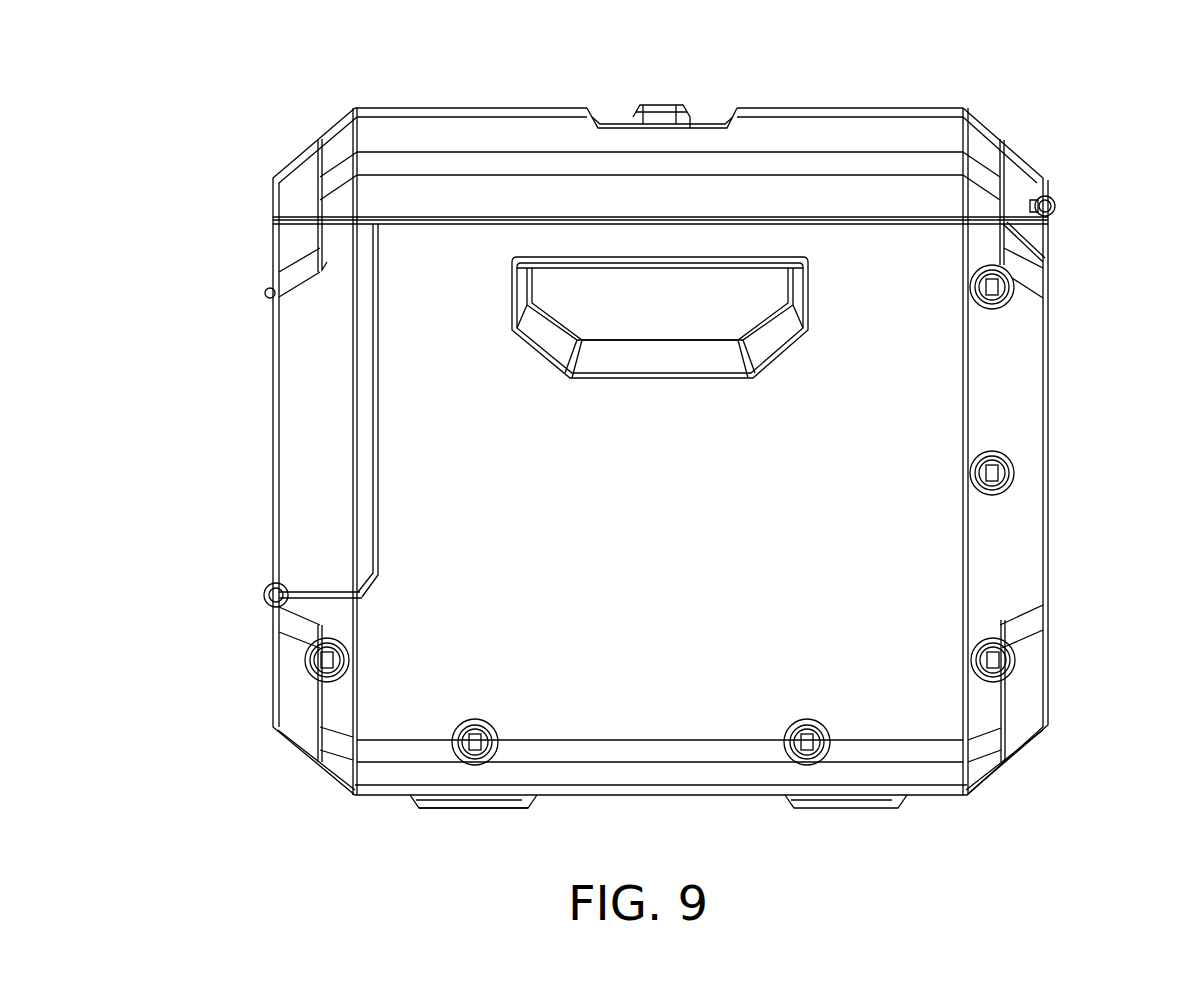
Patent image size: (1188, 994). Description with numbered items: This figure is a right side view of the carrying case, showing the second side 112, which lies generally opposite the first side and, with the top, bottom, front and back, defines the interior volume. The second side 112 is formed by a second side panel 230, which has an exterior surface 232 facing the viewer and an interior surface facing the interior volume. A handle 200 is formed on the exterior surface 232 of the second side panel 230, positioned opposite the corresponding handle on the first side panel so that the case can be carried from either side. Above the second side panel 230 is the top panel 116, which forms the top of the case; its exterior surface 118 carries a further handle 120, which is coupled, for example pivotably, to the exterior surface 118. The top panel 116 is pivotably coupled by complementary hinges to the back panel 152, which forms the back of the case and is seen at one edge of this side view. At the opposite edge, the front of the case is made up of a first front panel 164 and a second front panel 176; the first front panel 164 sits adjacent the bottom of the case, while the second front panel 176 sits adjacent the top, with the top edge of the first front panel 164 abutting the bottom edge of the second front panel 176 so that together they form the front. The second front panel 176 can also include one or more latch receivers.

The second side 112 is at (197, 262).
The top panel 116 is at (875, 115).
The exterior surface 118 is at (862, 203).
The handle 120 is at (612, 110).
The back panel 152 is at (1022, 688).
The first front panel 164 is at (302, 693).
The second front panel 176 is at (305, 437).
The handle 200 is at (655, 300).
The second side panel 230 is at (878, 410).
The exterior surface 232 is at (687, 562).